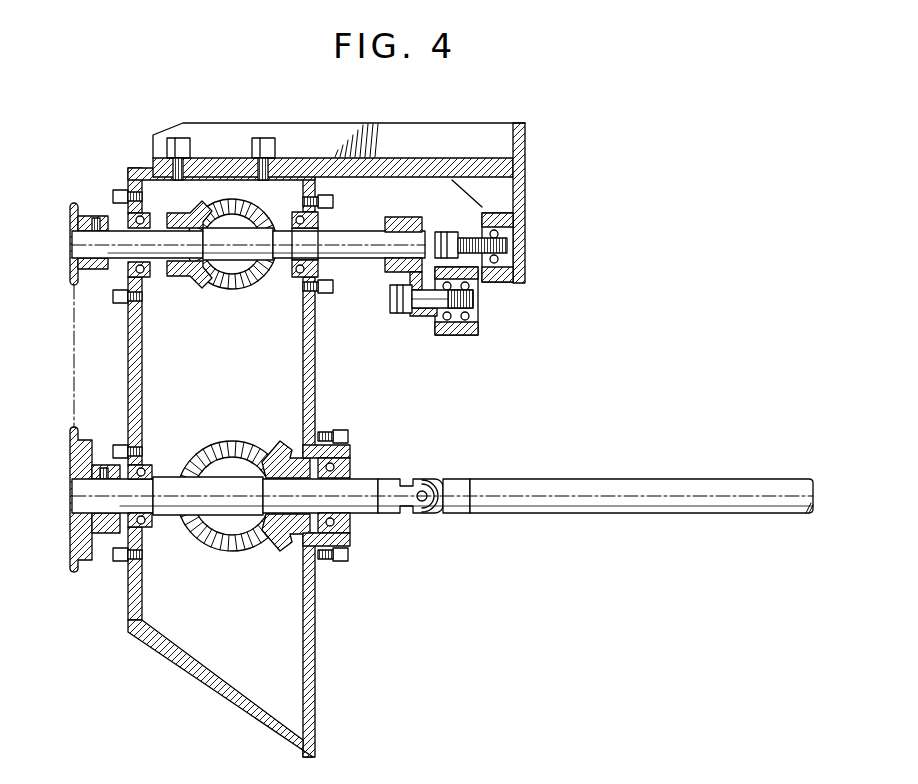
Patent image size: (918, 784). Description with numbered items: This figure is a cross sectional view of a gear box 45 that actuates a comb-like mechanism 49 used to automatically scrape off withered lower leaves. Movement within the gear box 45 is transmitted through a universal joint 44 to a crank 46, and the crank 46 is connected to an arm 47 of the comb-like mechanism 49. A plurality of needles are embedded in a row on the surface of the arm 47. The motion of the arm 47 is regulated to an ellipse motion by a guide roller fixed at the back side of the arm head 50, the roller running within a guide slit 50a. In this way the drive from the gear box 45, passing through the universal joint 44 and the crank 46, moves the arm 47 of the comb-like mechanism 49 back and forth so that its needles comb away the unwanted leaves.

The universal joint 44 is at (570, 481).
The gear box 45 is at (315, 663).
The crank 46 is at (360, 236).
The arm 47 is at (408, 272).
The comb-like mechanism 49 is at (474, 266).
The arm head 50 is at (433, 145).
The guide slit 50a is at (511, 222).